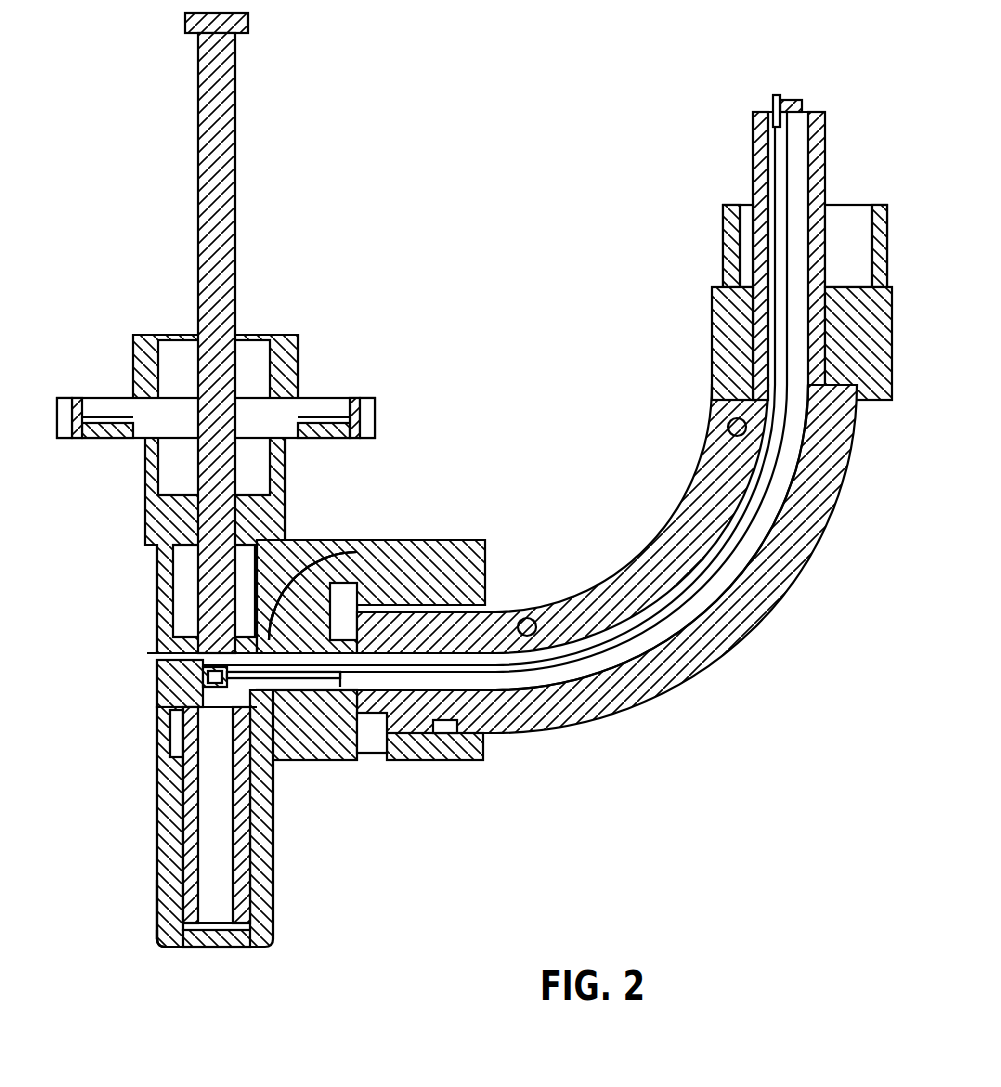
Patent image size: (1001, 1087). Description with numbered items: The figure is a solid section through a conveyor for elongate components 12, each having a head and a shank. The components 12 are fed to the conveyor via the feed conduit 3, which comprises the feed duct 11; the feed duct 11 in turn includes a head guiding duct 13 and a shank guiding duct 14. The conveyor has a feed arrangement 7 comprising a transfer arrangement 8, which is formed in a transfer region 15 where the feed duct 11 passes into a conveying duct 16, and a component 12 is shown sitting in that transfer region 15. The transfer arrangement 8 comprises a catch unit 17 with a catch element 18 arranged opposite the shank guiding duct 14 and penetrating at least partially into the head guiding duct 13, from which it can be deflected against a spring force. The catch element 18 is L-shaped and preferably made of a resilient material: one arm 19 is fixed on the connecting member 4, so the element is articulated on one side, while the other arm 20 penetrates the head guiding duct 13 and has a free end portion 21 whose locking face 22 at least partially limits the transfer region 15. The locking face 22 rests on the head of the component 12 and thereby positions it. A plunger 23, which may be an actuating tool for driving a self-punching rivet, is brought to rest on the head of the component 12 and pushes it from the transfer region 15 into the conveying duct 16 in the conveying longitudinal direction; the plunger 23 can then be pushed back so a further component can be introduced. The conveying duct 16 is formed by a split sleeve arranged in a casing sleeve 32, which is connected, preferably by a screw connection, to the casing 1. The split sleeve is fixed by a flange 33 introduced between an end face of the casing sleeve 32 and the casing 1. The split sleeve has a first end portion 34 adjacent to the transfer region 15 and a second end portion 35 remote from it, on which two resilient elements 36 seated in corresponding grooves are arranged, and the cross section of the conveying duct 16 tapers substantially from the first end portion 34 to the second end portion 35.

The casing 1 is at (155, 723).
The feed conduit 3 is at (755, 625).
The connecting member 4 is at (470, 577).
The feed arrangement 7 is at (399, 779).
The transfer arrangement 8 is at (300, 697).
The feed duct 11 is at (632, 650).
The component 12 is at (787, 95).
The head guiding duct 13 is at (727, 553).
The shank guiding duct 14 is at (757, 530).
The transfer region 15 is at (122, 641).
The conveying duct 16 is at (217, 862).
The catch unit 17 is at (290, 637).
The catch element 18 is at (310, 605).
The arm 19 is at (360, 600).
The arm 20 is at (310, 605).
The end portion 21 is at (274, 700).
The locking face 22 is at (274, 700).
The plunger 23 is at (213, 201).
The casing sleeve 32 is at (167, 910).
The flange 33 is at (157, 707).
The first end portion 34 is at (139, 762).
The second end portion 35 is at (130, 902).
The resilient elements 36 is at (163, 945).